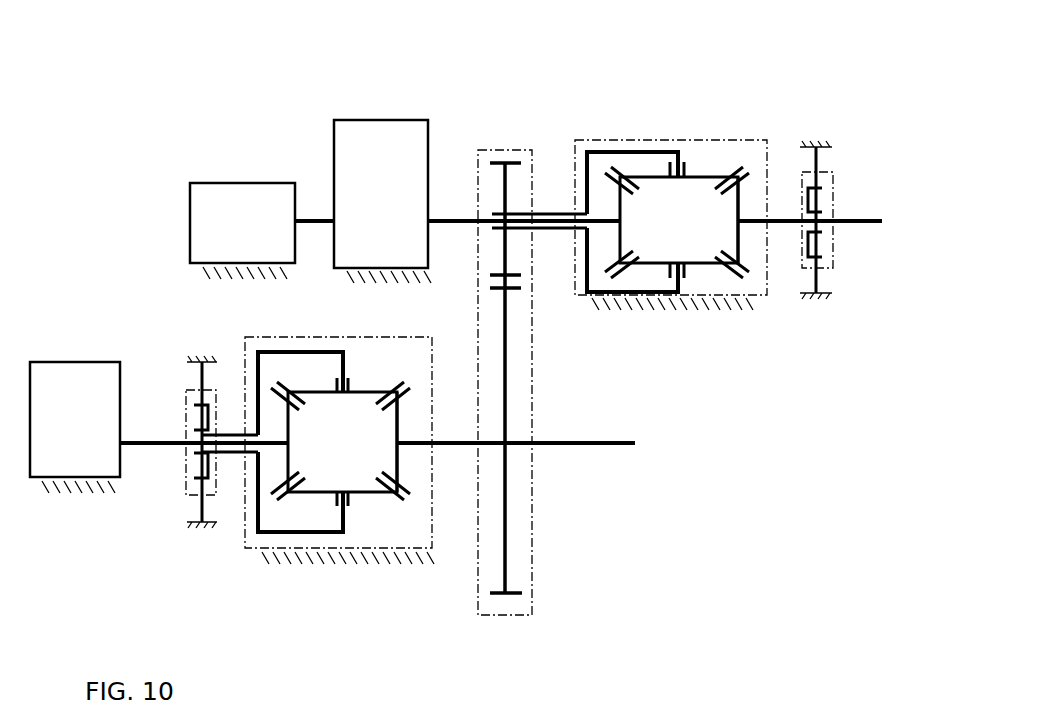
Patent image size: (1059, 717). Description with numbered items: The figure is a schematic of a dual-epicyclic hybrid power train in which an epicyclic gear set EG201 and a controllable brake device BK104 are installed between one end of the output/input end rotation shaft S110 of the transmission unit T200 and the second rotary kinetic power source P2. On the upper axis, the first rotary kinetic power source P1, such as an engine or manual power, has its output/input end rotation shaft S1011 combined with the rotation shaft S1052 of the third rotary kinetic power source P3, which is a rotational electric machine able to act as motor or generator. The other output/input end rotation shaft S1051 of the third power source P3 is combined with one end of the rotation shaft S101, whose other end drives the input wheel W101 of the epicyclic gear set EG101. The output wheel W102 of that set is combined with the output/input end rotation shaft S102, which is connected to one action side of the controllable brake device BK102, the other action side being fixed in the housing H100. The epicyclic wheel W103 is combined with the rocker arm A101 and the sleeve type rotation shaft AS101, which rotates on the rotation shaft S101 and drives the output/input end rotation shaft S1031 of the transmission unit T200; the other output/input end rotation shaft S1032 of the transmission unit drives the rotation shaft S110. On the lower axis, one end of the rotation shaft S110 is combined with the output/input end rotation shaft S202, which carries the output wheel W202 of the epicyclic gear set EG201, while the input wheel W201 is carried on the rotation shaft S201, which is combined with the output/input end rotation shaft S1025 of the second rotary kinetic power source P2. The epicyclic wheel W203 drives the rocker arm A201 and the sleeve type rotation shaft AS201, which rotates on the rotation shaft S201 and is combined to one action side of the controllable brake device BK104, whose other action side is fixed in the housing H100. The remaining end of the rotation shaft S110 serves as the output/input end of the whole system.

The first rotary kinetic power source P1 is at (242, 231).
The second rotary kinetic power source P2 is at (75, 427).
The third rotary kinetic power source P3 is at (382, 201).
The output/input end rotation shaft S1011 is at (312, 217).
The rotation shaft S1052 is at (332, 217).
The rotation shaft S101 is at (453, 217).
The output/input end rotation shaft S1051 is at (432, 227).
The transmission unit T200 is at (506, 150).
The sleeve type rotation shaft AS101 is at (563, 213).
The output/input end rotation shaft S1031 is at (510, 233).
The output/input end rotation shaft S1032 is at (510, 445).
The epicyclic gear set EG101 is at (655, 139).
The rocker arm A101 is at (628, 152).
The input wheel W101 is at (655, 220).
The output wheel W102 is at (715, 203).
The epicyclic wheel W103 is at (727, 173).
The output/input end rotation shaft S102 is at (782, 212).
The controllable brake device BK102 is at (835, 183).
The housing H100 is at (818, 143).
The rotation shaft S201 is at (145, 433).
The output/input end rotation shaft S1025 is at (127, 447).
The controllable brake device BK104 is at (185, 403).
The sleeve type rotation shaft AS201 is at (228, 457).
The epicyclic gear set EG201 is at (385, 337).
The rocker arm A201 is at (280, 352).
The input wheel W201 is at (323, 440).
The output wheel W202 is at (388, 425).
The epicyclic wheel W203 is at (385, 388).
The output/input end rotation shaft S110 is at (572, 437).
The output/input end rotation shaft S202 is at (453, 445).